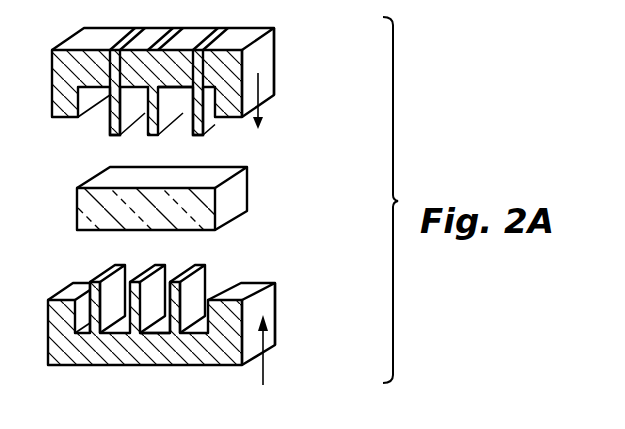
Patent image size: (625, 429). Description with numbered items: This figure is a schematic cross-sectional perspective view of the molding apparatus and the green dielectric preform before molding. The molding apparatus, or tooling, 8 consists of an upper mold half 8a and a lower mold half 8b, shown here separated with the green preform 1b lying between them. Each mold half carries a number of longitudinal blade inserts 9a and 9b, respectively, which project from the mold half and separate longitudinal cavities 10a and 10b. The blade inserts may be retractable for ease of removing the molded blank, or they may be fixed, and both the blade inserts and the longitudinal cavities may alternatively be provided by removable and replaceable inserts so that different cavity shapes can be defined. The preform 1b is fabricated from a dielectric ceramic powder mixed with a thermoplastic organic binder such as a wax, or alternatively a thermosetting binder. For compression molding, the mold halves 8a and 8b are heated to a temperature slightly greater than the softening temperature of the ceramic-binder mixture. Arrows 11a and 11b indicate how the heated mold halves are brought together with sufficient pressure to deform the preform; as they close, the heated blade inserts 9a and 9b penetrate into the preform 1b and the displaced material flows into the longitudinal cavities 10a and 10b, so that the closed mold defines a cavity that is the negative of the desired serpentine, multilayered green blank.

The molding apparatus 8 is at (318, 311).
The upper mold half 8a is at (265, 45).
The lower mold half 8b is at (272, 298).
The blade inserts 9a is at (208, 123).
The blade inserts 9b is at (193, 299).
The longitudinal cavities 10a is at (170, 88).
The longitudinal cavities 10b is at (155, 285).
The arrow 11a is at (260, 87).
The arrow 11b is at (293, 347).
The green preform 1b is at (237, 195).